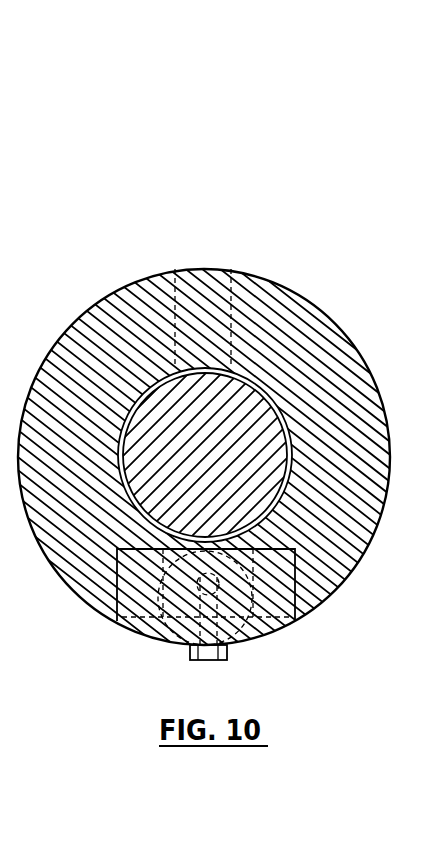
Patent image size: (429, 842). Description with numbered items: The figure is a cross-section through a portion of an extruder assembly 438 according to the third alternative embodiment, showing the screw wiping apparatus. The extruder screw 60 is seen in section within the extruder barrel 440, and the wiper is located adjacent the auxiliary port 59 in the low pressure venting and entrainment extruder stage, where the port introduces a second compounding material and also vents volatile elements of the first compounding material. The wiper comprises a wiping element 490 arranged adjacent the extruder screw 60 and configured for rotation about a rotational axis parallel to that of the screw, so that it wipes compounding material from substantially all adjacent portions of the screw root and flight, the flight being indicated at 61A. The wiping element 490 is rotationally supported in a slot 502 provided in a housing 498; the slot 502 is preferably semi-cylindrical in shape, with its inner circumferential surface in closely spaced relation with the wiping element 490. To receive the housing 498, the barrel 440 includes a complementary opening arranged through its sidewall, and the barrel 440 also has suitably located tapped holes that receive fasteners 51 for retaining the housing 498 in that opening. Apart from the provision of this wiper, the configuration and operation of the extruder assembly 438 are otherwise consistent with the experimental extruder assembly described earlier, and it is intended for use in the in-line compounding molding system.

The extruder assembly 438 is at (203, 198).
The extruder barrel 440 is at (298, 327).
The auxiliary port 59 is at (185, 297).
The extruder screw 60 is at (243, 416).
The bearing sleeve 61A is at (268, 524).
The housing 498 is at (266, 613).
The wiping element 490 is at (302, 588).
The slot 502 is at (157, 635).
The fasteners 51 is at (215, 661).